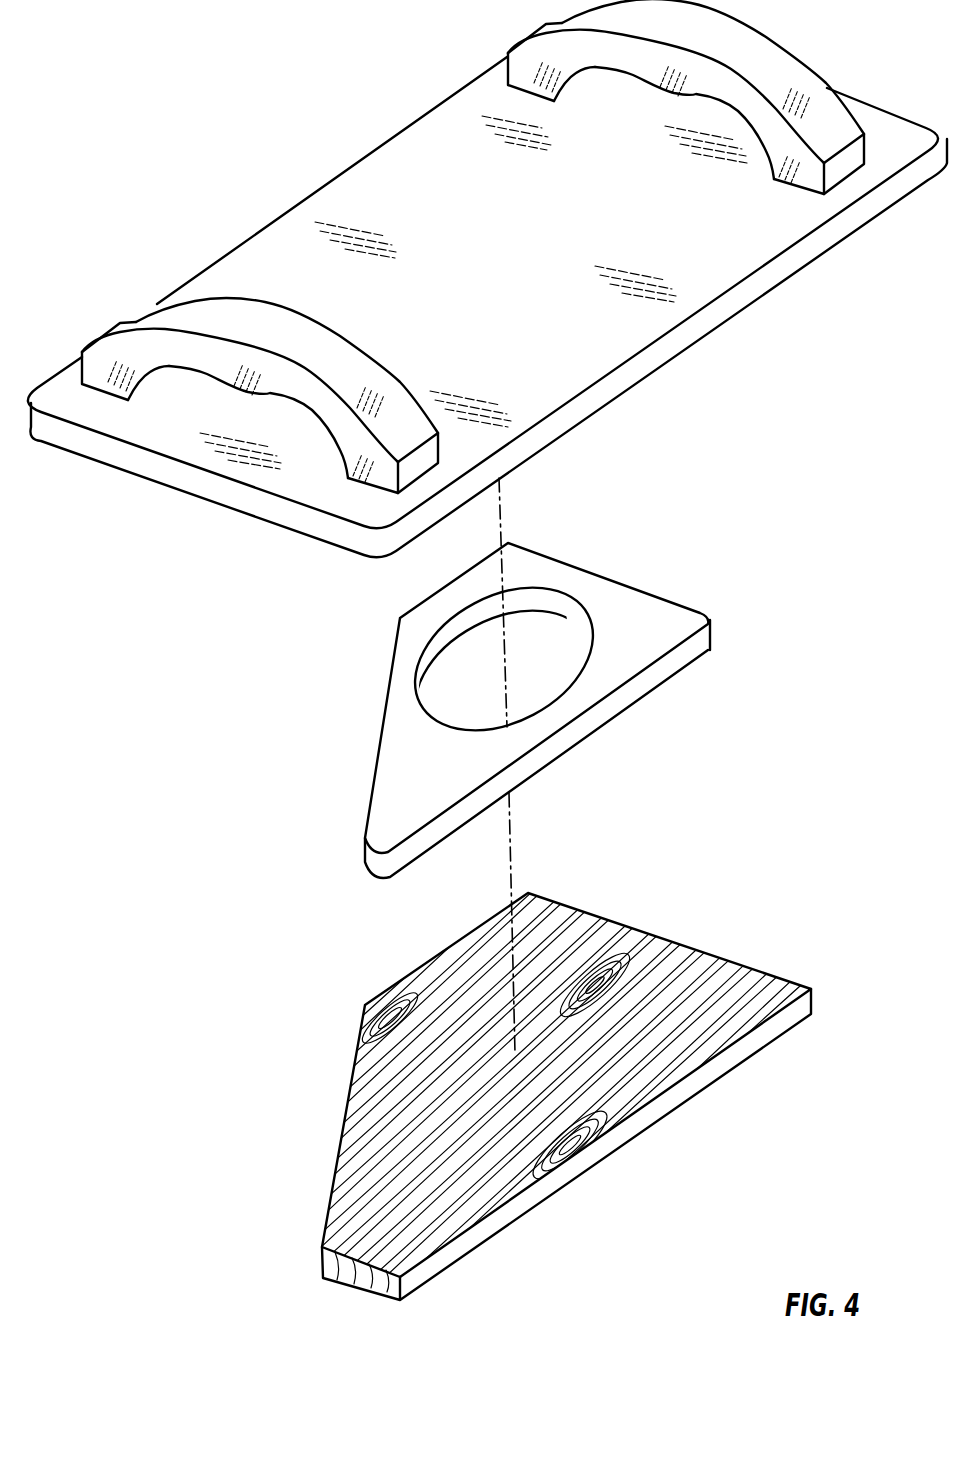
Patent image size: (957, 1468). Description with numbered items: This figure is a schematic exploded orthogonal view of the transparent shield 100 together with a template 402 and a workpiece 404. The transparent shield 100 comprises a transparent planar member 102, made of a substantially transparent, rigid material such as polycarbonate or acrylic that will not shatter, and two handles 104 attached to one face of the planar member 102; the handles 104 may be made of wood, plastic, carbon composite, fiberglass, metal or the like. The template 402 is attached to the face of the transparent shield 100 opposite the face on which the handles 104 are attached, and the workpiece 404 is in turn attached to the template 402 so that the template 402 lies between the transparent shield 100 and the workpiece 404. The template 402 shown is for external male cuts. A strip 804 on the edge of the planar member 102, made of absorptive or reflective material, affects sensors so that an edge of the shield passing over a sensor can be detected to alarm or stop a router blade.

The transparent shield 100 is at (237, 150).
The transparent planar member 102 is at (500, 249).
The handles 104 is at (343, 350).
The template 402 is at (652, 592).
The workpiece 404 is at (655, 936).
The strip 804 is at (193, 488).